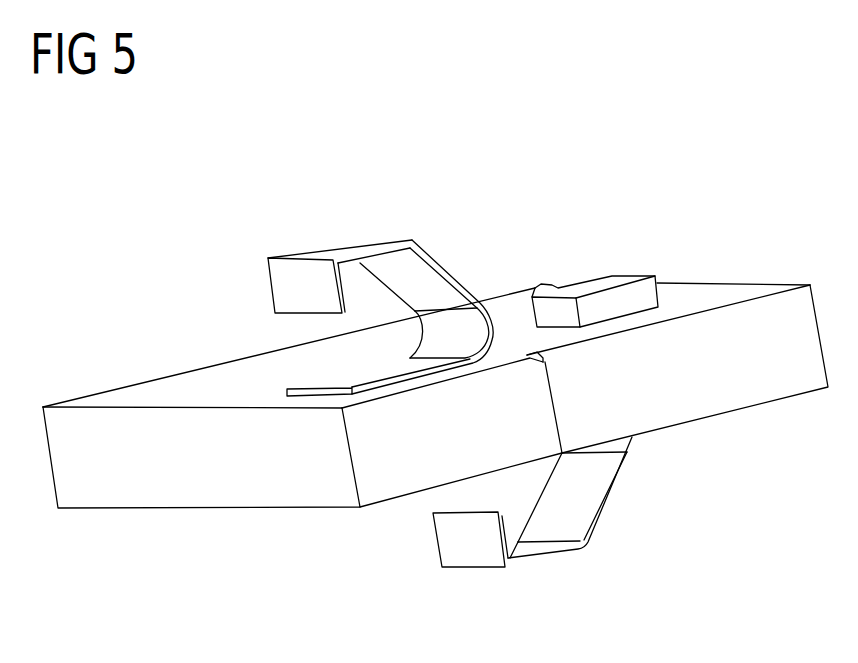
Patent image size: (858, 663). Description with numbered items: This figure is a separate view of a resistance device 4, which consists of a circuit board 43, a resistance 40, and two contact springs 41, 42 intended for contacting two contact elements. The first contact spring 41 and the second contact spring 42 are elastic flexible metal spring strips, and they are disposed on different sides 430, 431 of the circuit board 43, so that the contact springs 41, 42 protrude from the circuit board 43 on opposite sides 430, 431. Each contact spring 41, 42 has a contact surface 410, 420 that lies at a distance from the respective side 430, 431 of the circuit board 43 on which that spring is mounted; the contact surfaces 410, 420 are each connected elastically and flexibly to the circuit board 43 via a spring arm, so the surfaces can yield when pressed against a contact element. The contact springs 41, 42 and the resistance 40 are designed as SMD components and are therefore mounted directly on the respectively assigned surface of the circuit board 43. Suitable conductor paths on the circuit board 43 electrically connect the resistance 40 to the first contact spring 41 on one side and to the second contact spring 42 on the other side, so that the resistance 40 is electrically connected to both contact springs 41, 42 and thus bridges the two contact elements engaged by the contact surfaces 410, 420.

The resistance device 4 is at (469, 213).
The resistance 40 is at (622, 302).
The first contact spring 41 is at (387, 250).
The contact surface 410 is at (336, 261).
The second contact spring 42 is at (550, 560).
The contact surface 420 is at (505, 569).
The circuit board 43 is at (113, 493).
The side of circuit board 430 is at (193, 392).
The side of circuit board 431 is at (214, 516).